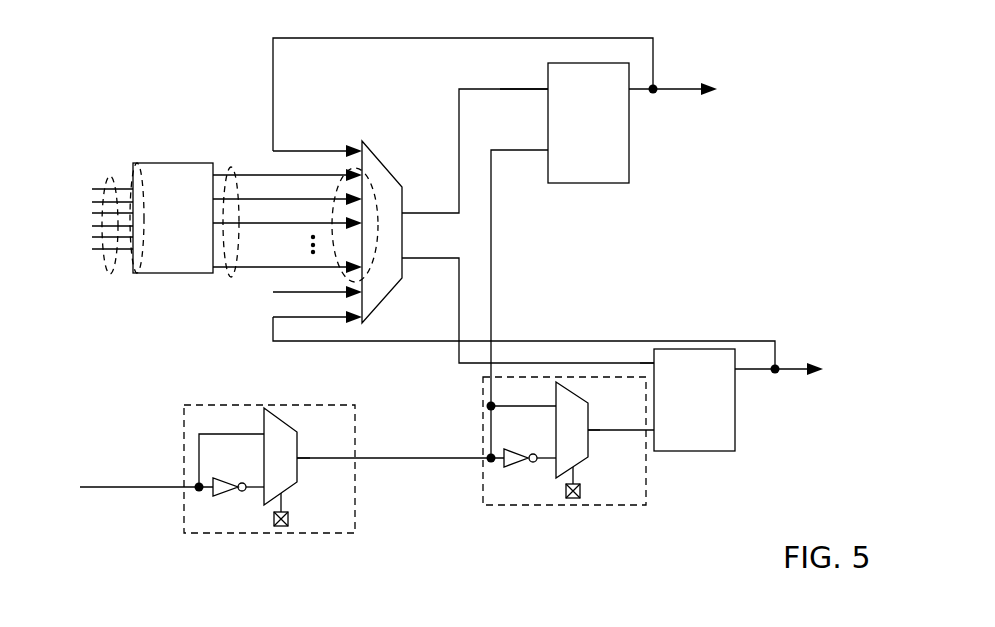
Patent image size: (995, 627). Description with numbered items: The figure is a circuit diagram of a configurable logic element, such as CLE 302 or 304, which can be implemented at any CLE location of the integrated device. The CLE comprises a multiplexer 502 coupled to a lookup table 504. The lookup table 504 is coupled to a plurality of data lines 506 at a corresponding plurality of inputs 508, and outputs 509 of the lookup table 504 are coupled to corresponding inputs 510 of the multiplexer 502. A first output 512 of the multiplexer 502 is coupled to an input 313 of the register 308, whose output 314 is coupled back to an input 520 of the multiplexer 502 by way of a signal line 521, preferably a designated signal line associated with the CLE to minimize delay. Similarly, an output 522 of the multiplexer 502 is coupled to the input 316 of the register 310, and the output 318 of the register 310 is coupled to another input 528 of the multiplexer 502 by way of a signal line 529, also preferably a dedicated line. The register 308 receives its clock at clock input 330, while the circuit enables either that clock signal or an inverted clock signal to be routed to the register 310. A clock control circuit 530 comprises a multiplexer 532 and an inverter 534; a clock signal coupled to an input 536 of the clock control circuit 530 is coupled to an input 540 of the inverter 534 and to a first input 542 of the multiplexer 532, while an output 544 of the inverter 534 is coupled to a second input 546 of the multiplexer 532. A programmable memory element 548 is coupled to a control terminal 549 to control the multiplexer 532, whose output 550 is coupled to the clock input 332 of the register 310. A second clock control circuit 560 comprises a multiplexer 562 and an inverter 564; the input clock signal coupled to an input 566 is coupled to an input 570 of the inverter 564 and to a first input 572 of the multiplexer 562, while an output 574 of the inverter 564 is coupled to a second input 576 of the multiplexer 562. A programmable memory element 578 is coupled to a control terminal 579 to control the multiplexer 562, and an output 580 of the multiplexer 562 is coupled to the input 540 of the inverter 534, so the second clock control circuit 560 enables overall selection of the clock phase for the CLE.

The configurable logic element 302 is at (768, 183).
The configurable logic element 304 is at (846, 181).
The register 308 is at (572, 187).
The register 310 is at (737, 403).
The input of the register 313 is at (547, 95).
The output of the register 314 is at (632, 90).
The input of the register 316 is at (650, 366).
The output of the register 318 is at (740, 362).
The clock input 330 is at (547, 155).
The clock input of the register 332 is at (647, 430).
The multiplexer 502 is at (383, 157).
The lookup table 504 is at (160, 162).
The data lines 506 is at (110, 178).
The inputs 508 is at (135, 165).
The outputs of the lookup table 509 is at (230, 168).
The inputs of the multiplexer 510 is at (348, 172).
The first output of the multiplexer 512 is at (403, 210).
The input of the multiplexer 520 is at (360, 142).
The signal line 521 is at (273, 85).
The output of the multiplexer 522 is at (403, 263).
The input of the multiplexer 528 is at (358, 330).
The signal line 529 is at (577, 340).
The clock control circuit 530 is at (483, 402).
The multiplexer 532 is at (580, 462).
The inverter 534 is at (500, 470).
The input of the clock control circuit 536 is at (480, 460).
The input of the inverter 540 is at (488, 455).
The first input of the multiplexer 542 is at (555, 405).
The output of the inverter 544 is at (532, 454).
The second input of the multiplexer 546 is at (553, 468).
The programmable memory element 548 is at (580, 505).
The control terminal 549 is at (580, 477).
The output of the multiplexer 550 is at (590, 435).
The second clock control circuit 560 is at (184, 427).
The multiplexer 562 is at (288, 490).
The inverter 564 is at (208, 497).
The input of the clock control circuit 566 is at (187, 488).
The input of the inverter 570 is at (197, 483).
The first input of the multiplexer 572 is at (263, 428).
The output of the inverter 574 is at (241, 483).
The second input of the multiplexer 576 is at (262, 495).
The programmable memory element 578 is at (287, 533).
The control terminal 579 is at (288, 505).
The output of the multiplexer 580 is at (298, 462).